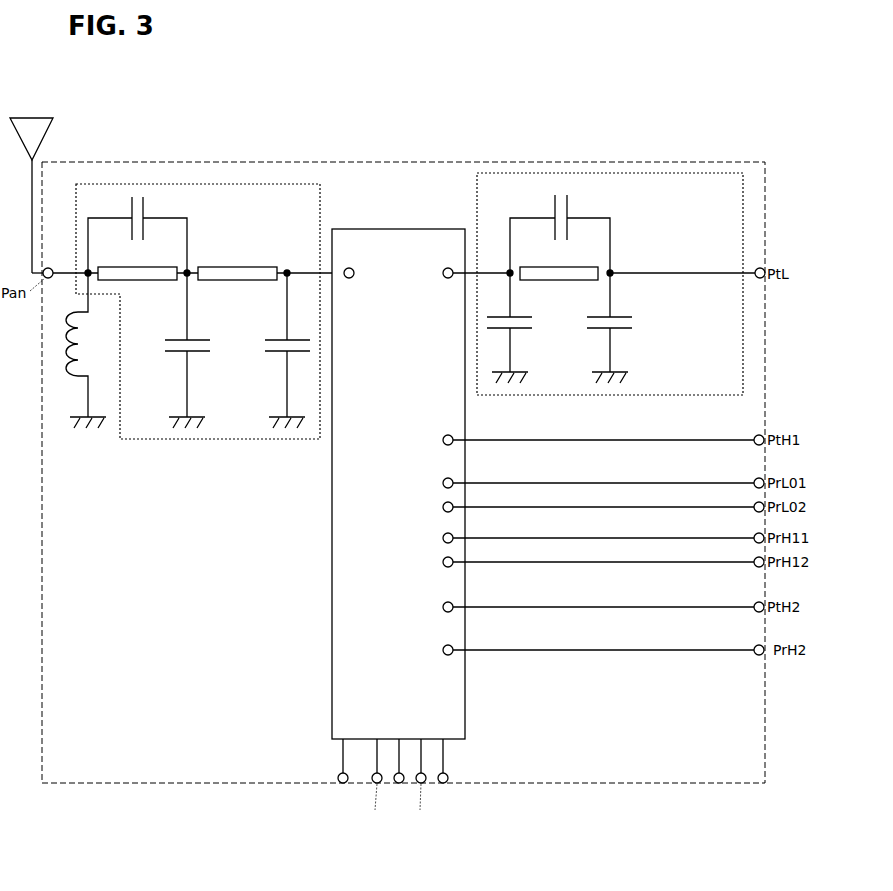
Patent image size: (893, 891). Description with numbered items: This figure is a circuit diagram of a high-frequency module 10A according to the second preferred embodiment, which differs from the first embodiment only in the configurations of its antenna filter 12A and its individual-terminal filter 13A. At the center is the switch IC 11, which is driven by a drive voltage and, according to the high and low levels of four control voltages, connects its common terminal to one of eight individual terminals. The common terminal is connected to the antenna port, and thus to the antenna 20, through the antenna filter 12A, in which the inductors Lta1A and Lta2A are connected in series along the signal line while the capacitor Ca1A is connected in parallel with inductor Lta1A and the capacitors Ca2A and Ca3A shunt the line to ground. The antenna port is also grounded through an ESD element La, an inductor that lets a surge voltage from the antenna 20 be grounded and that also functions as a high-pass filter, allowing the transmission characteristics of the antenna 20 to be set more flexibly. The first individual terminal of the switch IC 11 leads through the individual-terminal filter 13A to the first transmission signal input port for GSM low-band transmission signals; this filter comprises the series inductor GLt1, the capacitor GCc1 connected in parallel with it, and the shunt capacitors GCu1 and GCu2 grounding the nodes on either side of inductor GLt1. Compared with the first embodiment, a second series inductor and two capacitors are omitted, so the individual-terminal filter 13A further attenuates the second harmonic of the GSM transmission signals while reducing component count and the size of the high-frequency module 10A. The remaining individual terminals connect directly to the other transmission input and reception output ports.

The antenna 20 is at (40, 119).
The high-frequency module 10A is at (722, 162).
The antenna filter 12A is at (319, 206).
The switch IC 11 is at (433, 229).
The individual-terminal filter 13A is at (745, 196).
The capacitor Ca1A is at (138, 234).
The inductor Lta1A is at (137, 265).
The inductor Lta2A is at (237, 265).
The ESD element La is at (86, 350).
The capacitor Ca2A is at (198, 350).
The capacitor Ca3A is at (274, 350).
The capacitor GCc1 is at (557, 234).
The inductor GLt1 is at (559, 265).
The capacitor GCu1 is at (521, 328).
The capacitor GCu2 is at (620, 328).